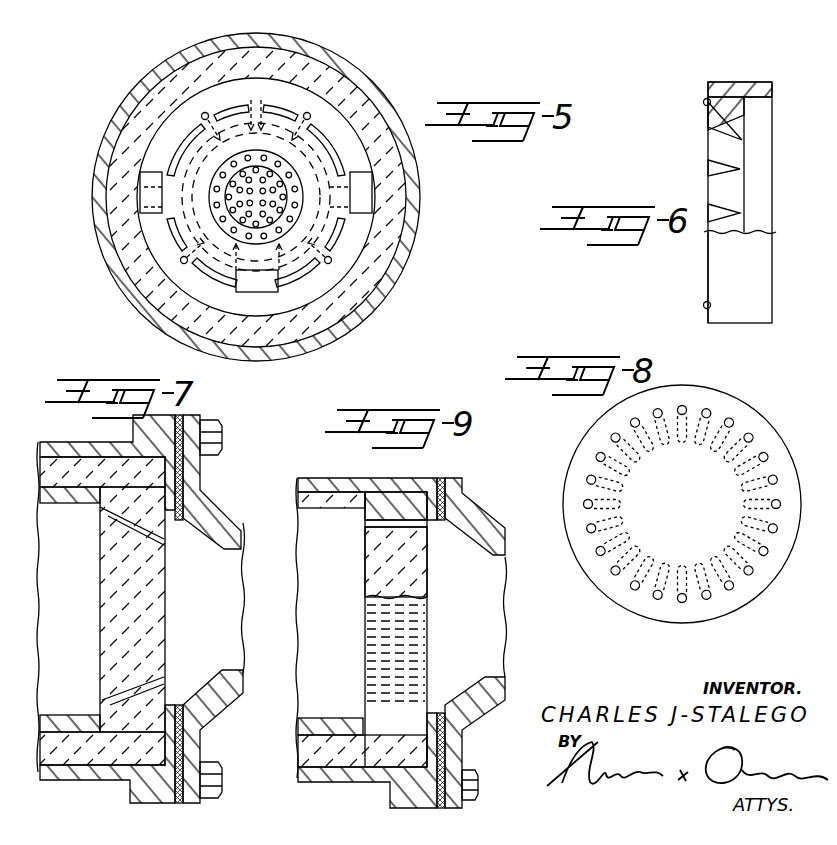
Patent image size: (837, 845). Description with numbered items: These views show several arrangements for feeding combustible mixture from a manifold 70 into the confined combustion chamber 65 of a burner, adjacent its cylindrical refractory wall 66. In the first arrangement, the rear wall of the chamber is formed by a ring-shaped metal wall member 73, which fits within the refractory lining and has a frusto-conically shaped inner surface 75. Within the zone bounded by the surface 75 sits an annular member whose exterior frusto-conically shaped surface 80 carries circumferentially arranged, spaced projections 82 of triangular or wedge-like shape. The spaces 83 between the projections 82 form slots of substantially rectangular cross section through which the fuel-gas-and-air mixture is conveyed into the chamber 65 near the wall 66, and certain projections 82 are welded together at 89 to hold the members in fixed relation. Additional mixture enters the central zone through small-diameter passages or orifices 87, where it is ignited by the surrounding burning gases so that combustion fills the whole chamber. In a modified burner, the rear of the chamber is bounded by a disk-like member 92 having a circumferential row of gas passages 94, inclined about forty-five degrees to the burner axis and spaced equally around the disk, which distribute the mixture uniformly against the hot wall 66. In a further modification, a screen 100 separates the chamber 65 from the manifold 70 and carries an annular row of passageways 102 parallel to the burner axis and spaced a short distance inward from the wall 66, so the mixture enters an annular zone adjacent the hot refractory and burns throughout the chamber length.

In FIG. 5, the frusto-conically shaped surface 80 is at (290, 108).
In FIG. 5, the projections 82 is at (261, 100).
In FIG. 6, the projections 82 is at (718, 212).
In FIG. 5, the spaces 83 is at (356, 185).
In FIG. 6, the spaces 83 is at (730, 150).
In FIG. 5, the passages or orifices 87 is at (215, 205).
In FIG. 5, the weld 89 is at (312, 113).
In FIG. 6, the weld 89 is at (705, 101).
In FIG. 6, the frusto-conically shaped inner surface 75 is at (736, 96).
In FIG. 6, the wall member 73 is at (705, 252).
In FIG. 7, the cylindrical wall portion 66 is at (46, 492).
In FIG. 9, the cylindrical wall portion 66 is at (312, 506).
In FIG. 7, the combustion chamber 65 is at (85, 612).
In FIG. 9, the combustion chamber 65 is at (350, 580).
In FIG. 7, the manifold 70 is at (228, 610).
In FIG. 9, the manifold 70 is at (490, 612).
In FIG. 7, the disk-like member 92 is at (160, 584).
In FIG. 8, the disk-like member 92 is at (726, 406).
In FIG. 7, the gas passages 94 is at (112, 547).
In FIG. 8, the gas passages 94 is at (680, 600).
In FIG. 9, the screen 100 is at (372, 619).
In FIG. 9, the passageways 102 is at (372, 522).